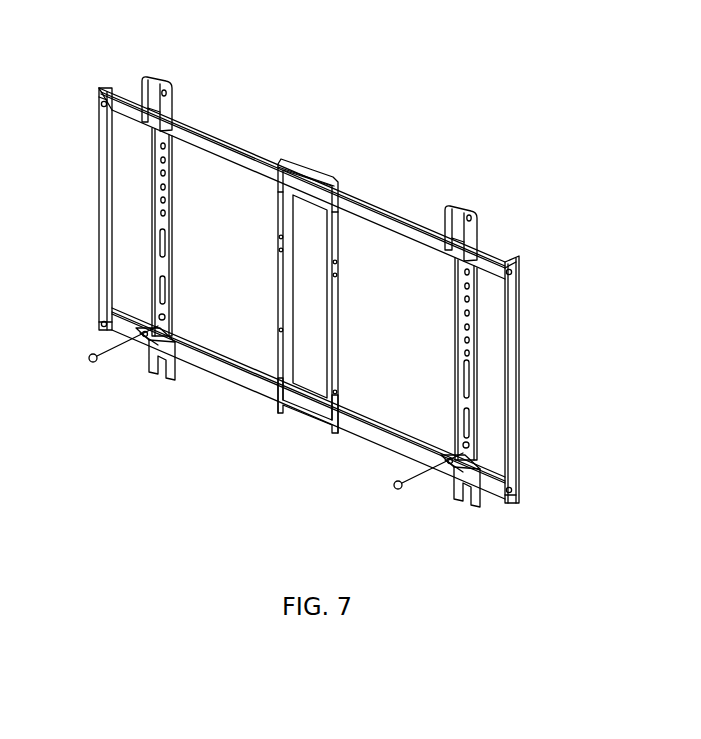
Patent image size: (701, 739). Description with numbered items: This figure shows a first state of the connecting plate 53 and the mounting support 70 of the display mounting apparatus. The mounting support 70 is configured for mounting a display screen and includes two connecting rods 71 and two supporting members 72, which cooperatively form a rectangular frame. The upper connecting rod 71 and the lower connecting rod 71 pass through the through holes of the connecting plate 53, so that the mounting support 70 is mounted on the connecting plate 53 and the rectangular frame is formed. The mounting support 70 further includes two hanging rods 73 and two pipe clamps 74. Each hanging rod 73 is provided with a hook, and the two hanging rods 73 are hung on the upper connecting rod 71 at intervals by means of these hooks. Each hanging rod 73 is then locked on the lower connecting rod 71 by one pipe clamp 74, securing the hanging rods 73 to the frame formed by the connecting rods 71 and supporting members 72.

The mounting support 70 is at (326, 108).
The connecting rods 71 is at (400, 230).
The supporting members 72 is at (108, 203).
The hanging rods 73 is at (172, 100).
The pipe clamps 74 is at (145, 371).
The connecting plate 53 is at (308, 166).